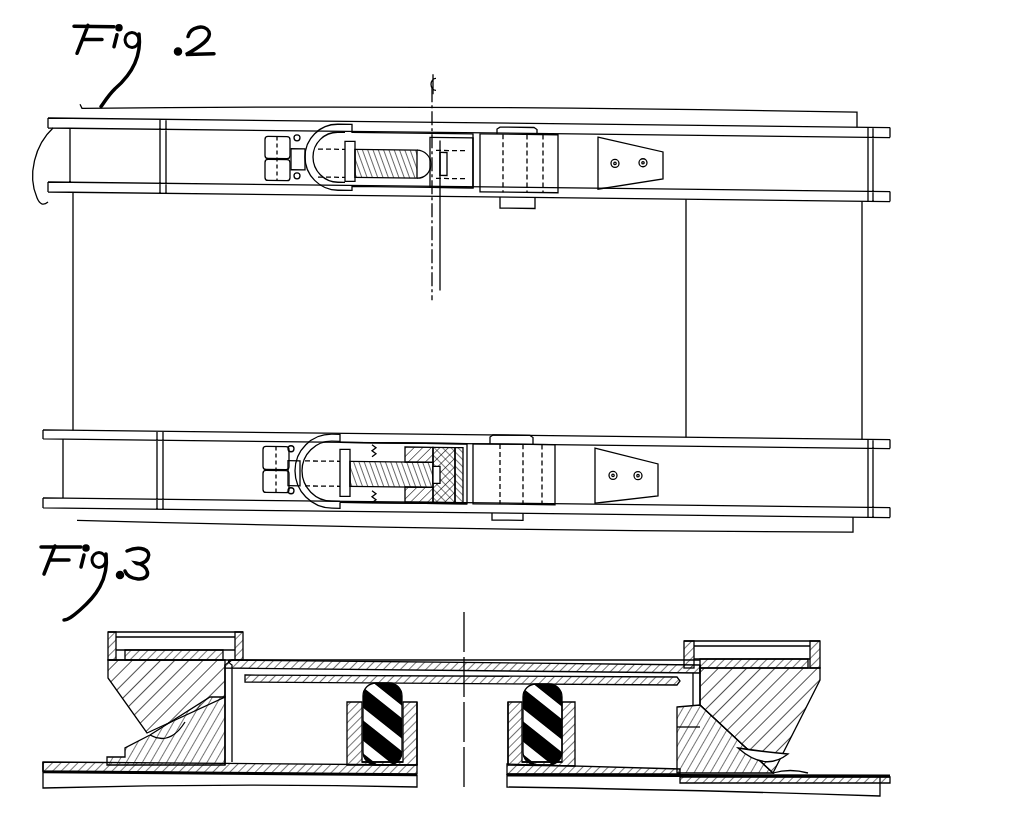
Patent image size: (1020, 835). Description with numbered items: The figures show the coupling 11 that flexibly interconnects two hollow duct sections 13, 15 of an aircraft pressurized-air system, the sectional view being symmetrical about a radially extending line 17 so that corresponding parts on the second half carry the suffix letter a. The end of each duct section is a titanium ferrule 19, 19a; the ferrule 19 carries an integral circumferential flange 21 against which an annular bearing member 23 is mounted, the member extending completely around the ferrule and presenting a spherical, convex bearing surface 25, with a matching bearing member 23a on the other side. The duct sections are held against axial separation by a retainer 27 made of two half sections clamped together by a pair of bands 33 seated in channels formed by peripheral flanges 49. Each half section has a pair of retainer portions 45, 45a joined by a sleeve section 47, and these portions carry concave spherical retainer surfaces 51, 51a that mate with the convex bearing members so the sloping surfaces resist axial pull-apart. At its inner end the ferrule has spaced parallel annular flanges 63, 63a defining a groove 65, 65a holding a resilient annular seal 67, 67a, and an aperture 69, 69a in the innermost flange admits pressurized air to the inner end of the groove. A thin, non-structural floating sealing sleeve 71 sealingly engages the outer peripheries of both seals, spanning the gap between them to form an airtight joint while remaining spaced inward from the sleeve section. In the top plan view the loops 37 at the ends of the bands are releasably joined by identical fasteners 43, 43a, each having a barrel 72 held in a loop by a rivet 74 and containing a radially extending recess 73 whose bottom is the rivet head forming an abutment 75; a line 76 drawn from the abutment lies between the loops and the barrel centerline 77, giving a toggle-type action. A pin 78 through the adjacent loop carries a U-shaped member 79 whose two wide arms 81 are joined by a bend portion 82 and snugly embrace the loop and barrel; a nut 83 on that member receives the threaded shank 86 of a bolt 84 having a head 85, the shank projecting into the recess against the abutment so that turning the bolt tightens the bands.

In FIG. 3, the coupling 11 is at (558, 633).
In FIG. 3, the duct section 13 is at (870, 772).
In FIG. 3, the duct section 15 is at (61, 750).
In FIG. 3, the radially extending line 17 is at (466, 613).
In FIG. 3, the ferrule 19 is at (850, 790).
In FIG. 3, the ferrule 19a is at (80, 778).
In FIG. 3, the flange 21 is at (663, 775).
In FIG. 3, the bearing member 23 is at (737, 758).
In FIG. 3, the bearing member 23a is at (182, 748).
In FIG. 3, the bearing surface 25 is at (798, 760).
In FIG. 3, the retainer 27 is at (290, 657).
In FIG. 2, the band 33 is at (125, 159).
In FIG. 3, the band 33 is at (162, 656).
In FIG. 2, the loop 37 is at (578, 159).
In FIG. 2, the fastener 43 is at (331, 428).
In FIG. 2, the fastener 43a is at (388, 112).
In FIG. 3, the retainer portion 45 is at (788, 696).
In FIG. 3, the retainer portion 45a is at (145, 683).
In FIG. 3, the sleeve section 47 is at (418, 669).
In FIG. 2, the peripheral flange 49 is at (180, 503).
In FIG. 3, the peripheral flange 49 is at (118, 631).
In FIG. 3, the retainer surface 51 is at (755, 748).
In FIG. 3, the retainer surface 51a is at (175, 740).
In FIG. 3, the annular flange 63 is at (510, 717).
In FIG. 3, the annular flange 63a is at (355, 727).
In FIG. 3, the groove 65 is at (568, 758).
In FIG. 3, the groove 65a is at (365, 752).
In FIG. 3, the seal 67 is at (560, 737).
In FIG. 3, the seal 67a is at (362, 695).
In FIG. 3, the aperture 69 is at (510, 753).
In FIG. 3, the aperture 69a is at (420, 753).
In FIG. 3, the floating sealing sleeve 71 is at (500, 665).
In FIG. 2, the barrel 72 is at (442, 453).
In FIG. 2, the recess 73 is at (412, 449).
In FIG. 2, the rivet 74 is at (465, 483).
In FIG. 2, the abutment 75 is at (432, 496).
In FIG. 2, the line 76 is at (440, 256).
In FIG. 2, the centerline 77 is at (432, 228).
In FIG. 2, the pin 78 is at (513, 429).
In FIG. 2, the U-shaped member 79 is at (350, 436).
In FIG. 2, the arm 81 is at (422, 435).
In FIG. 2, the bend portion 82 is at (312, 445).
In FIG. 2, the nut 83 is at (323, 479).
In FIG. 2, the bolt 84 is at (253, 478).
In FIG. 2, the head 85 is at (270, 453).
In FIG. 2, the threaded shank 86 is at (386, 463).